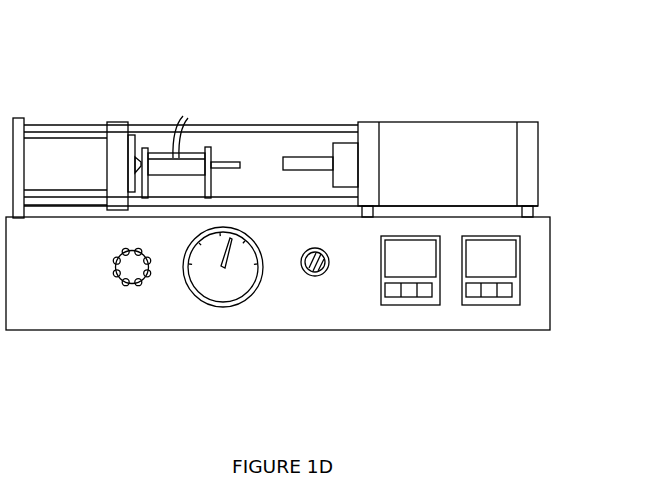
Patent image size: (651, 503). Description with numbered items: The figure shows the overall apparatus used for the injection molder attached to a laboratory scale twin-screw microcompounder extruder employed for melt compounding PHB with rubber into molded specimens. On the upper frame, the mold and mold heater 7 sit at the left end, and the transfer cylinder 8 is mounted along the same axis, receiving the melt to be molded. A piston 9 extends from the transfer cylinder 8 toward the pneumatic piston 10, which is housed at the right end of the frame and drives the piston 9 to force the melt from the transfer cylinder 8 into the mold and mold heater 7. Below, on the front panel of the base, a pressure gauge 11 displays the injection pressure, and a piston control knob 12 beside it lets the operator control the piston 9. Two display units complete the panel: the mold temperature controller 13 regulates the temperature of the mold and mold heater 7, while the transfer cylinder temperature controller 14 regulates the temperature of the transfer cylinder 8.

The mold and mold heater 7 is at (85, 157).
The transfer cylinder 8 is at (161, 158).
The piston 9 is at (240, 141).
The pneumatic piston 10 is at (408, 142).
The pressure gauge 11 is at (206, 269).
The piston control knob 12 is at (292, 274).
The mold temperature controller 13 is at (404, 269).
The transfer cylinder temperature controller 14 is at (497, 269).